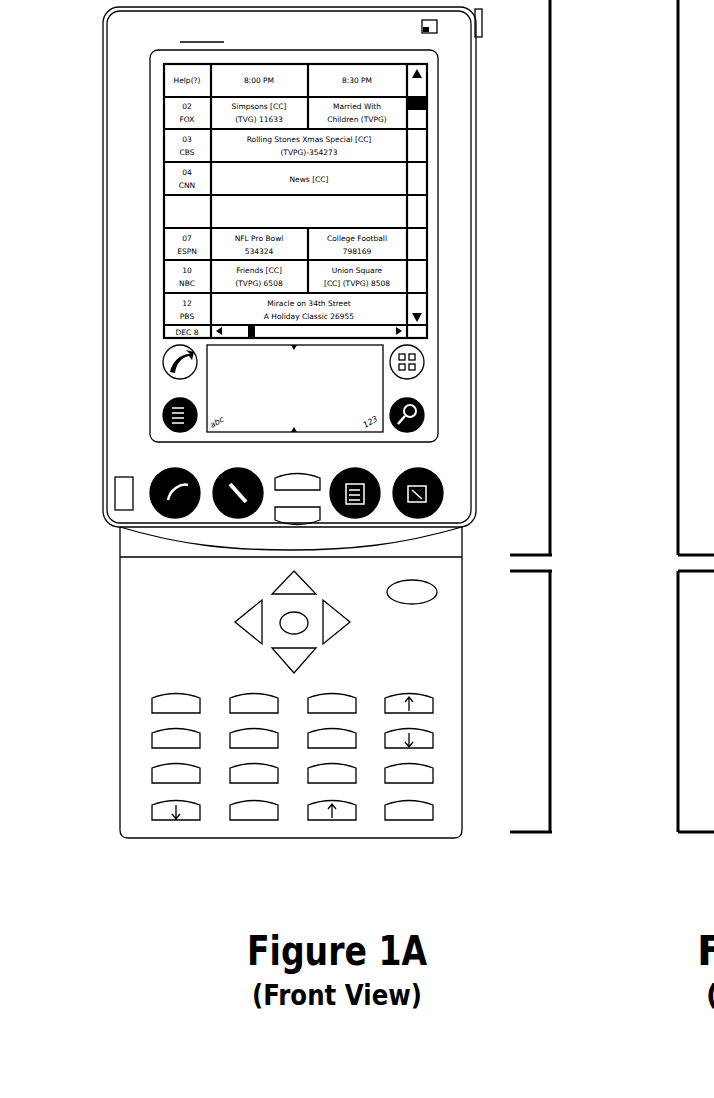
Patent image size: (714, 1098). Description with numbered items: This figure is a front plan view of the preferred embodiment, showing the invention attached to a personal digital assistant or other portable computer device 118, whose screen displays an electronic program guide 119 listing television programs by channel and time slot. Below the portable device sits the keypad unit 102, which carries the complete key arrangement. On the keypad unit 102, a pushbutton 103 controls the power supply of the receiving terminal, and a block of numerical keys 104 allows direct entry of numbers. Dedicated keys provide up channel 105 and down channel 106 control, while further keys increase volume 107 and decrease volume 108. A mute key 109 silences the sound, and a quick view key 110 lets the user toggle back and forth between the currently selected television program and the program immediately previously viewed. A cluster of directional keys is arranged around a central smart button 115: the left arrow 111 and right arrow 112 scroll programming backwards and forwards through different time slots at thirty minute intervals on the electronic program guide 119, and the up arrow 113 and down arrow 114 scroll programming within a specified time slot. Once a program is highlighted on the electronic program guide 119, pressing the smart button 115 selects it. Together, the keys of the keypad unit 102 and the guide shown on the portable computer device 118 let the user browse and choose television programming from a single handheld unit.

The keypad unit 102 is at (618, 703).
The pushbutton for the power supply 103 is at (437, 592).
The numerical keys 104 is at (292, 800).
The up channel key 105 is at (165, 820).
The down channel key 106 is at (320, 820).
The increase volume key 107 is at (433, 703).
The decrease volume key 108 is at (433, 740).
The mute key 109 is at (433, 775).
The quick view key 110 is at (433, 811).
The left arrow 111 is at (234, 623).
The right arrow 112 is at (350, 622).
The up arrow 113 is at (277, 583).
The down arrow 114 is at (277, 655).
The smart button 115 is at (303, 633).
The personal digital assistant 118 is at (617, 268).
The electronic program guide 119 is at (164, 211).